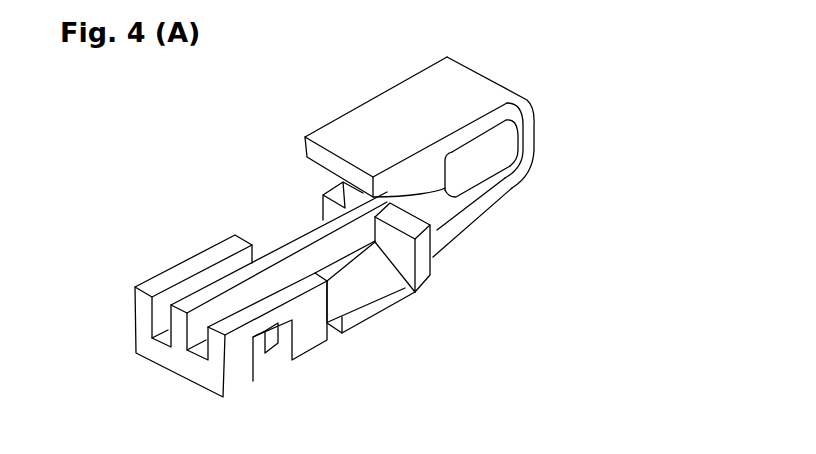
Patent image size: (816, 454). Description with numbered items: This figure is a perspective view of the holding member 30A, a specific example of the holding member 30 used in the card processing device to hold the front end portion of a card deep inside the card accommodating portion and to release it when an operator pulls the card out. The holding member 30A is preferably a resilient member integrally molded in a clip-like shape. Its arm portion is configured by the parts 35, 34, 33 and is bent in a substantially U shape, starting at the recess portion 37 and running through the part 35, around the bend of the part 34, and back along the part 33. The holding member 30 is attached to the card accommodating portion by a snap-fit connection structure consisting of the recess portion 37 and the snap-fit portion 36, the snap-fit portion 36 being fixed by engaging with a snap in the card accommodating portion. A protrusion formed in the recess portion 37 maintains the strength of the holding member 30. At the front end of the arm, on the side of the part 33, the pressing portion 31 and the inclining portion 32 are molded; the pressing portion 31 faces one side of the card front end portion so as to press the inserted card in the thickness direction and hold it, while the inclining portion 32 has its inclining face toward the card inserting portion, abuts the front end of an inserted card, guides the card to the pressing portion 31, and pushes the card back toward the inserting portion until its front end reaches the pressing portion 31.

The holding member 30A is at (520, 265).
The holding member 30 is at (393, 233).
The pressing portion 31 is at (488, 196).
The inclining portion 32 is at (447, 193).
The arm portion part 33 is at (386, 103).
The arm portion part 34 is at (535, 112).
The arm portion part 35 is at (370, 318).
The snap-fit portion 36 is at (268, 361).
The recess portion 37 is at (203, 357).